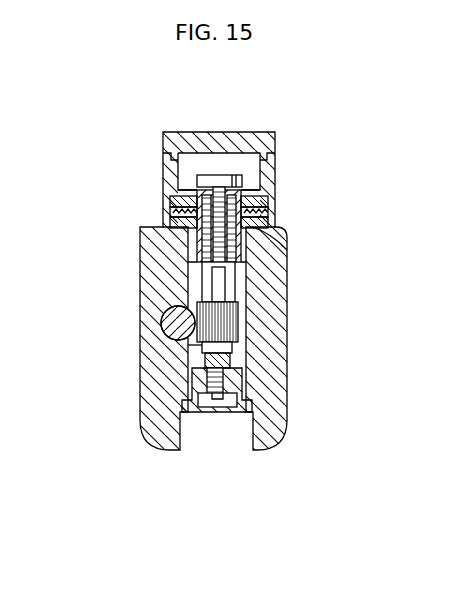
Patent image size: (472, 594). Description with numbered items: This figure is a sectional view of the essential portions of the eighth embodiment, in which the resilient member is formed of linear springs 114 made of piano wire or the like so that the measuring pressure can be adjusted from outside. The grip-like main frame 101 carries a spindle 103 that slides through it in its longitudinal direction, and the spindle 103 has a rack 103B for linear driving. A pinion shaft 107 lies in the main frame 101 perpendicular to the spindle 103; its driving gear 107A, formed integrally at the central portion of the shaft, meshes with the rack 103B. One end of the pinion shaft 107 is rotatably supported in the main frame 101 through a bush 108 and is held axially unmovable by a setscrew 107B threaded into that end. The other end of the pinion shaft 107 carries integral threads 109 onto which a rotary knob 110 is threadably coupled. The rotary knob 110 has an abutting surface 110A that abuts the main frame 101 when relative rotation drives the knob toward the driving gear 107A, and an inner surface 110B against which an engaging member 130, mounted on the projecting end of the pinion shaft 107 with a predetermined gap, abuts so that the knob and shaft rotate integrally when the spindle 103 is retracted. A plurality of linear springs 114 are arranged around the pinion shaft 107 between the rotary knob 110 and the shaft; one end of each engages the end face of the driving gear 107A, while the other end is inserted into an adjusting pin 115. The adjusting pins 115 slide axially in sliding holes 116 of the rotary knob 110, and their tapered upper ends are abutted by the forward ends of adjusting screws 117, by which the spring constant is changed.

The main frame 101 is at (272, 356).
The spindle 103 is at (172, 324).
The rack 103B is at (215, 346).
The pinion shaft 107 is at (232, 280).
The driving gear 107A is at (232, 320).
The setscrew 107B is at (228, 410).
The bush 108 is at (240, 380).
The threads 109 is at (205, 232).
The rotary knob 110 is at (278, 160).
The abutting surface 110A is at (272, 240).
The inner surface 110B is at (266, 182).
The linear springs 114 is at (220, 268).
The adjusting pins 115 is at (182, 222).
The sliding holes 116 is at (183, 200).
The adjusting screws 117 is at (183, 212).
The engaging member 130 is at (218, 178).